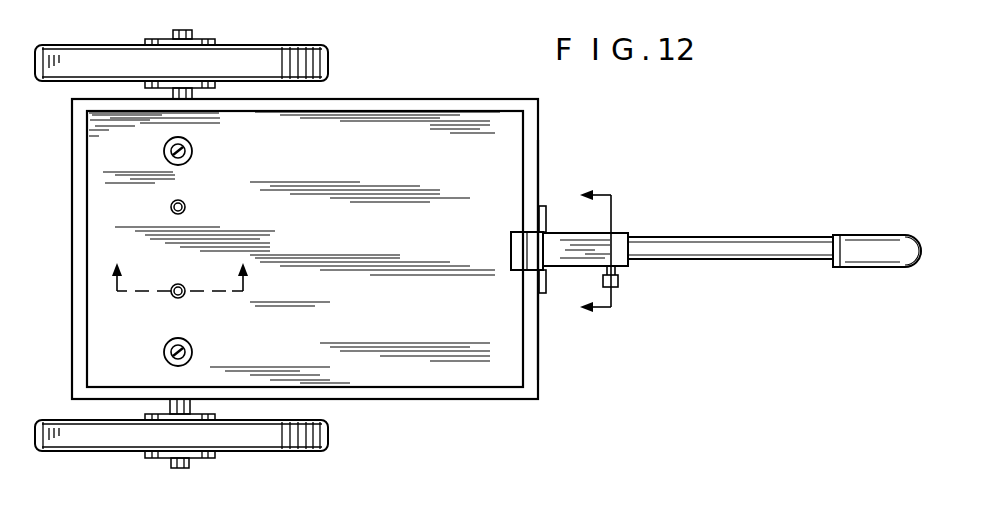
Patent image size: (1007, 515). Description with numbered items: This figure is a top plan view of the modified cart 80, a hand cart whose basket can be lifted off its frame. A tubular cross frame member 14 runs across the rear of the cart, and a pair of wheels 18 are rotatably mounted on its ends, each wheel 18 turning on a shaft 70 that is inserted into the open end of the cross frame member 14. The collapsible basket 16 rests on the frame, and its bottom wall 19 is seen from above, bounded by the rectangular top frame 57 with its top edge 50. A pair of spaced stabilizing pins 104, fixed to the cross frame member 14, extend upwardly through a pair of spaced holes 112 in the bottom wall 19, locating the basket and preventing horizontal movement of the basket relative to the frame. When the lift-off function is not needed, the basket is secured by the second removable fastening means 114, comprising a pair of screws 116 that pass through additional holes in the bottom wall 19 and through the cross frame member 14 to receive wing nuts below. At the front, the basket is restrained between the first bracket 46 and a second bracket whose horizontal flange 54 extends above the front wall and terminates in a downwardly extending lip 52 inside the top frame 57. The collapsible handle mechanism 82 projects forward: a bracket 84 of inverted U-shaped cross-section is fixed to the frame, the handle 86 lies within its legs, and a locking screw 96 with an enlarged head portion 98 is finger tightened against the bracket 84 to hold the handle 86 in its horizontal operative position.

The modified cart 80 is at (452, 73).
The collapsible handle mechanism 82 is at (806, 228).
The bracket 84 is at (612, 238).
The handle 86 is at (794, 243).
The locking screw 96 is at (626, 278).
The enlarged head portion 98 is at (618, 284).
The cross frame member 14 is at (172, 92).
The collapsible basket 16 is at (552, 125).
The wheel 18 is at (330, 48).
The bottom wall 19 is at (367, 244).
The first bracket 46 is at (546, 285).
The top edge 50 is at (530, 346).
The lip 52 is at (510, 239).
The horizontal flange 54 is at (523, 240).
The top frame 57 is at (478, 399).
The shaft 70 is at (192, 34).
The stabilizing pin 104 is at (186, 208).
The hole 112 is at (183, 203).
The second removable fastening means 114 is at (205, 150).
The screw 116 is at (167, 154).